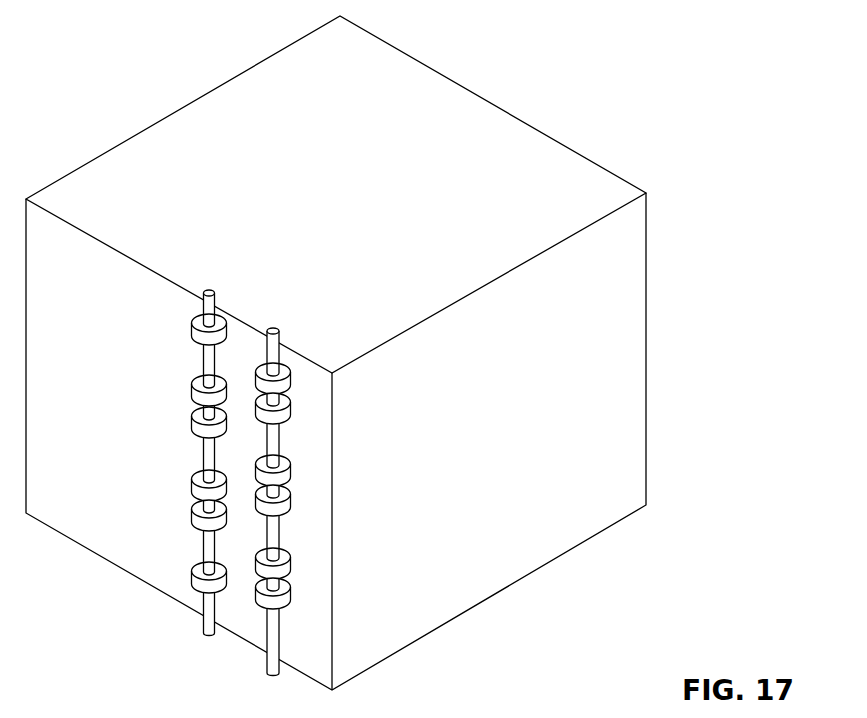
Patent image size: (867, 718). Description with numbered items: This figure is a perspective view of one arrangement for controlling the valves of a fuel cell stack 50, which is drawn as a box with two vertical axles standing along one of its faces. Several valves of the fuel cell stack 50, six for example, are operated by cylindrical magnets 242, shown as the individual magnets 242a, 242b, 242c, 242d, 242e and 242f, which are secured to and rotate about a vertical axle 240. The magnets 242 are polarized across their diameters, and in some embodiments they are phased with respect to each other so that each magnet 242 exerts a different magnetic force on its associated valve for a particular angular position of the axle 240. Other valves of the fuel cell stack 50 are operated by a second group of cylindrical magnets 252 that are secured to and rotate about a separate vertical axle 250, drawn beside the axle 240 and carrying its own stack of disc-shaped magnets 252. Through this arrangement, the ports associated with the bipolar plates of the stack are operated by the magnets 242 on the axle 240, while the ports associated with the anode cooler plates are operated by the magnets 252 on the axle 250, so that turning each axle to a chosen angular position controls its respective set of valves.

The fuel cell stack 50 is at (660, 372).
The vertical axle 240 is at (267, 668).
The vertical axle 250 is at (205, 633).
The cylindrical magnets 252 is at (192, 333).
The cylindrical magnets 242 is at (376, 525).
The magnet 242a is at (290, 389).
The magnet 242b is at (290, 419).
The magnet 242c is at (290, 481).
The magnet 242d is at (290, 511).
The magnet 242e is at (290, 574).
The magnet 242f is at (290, 604).